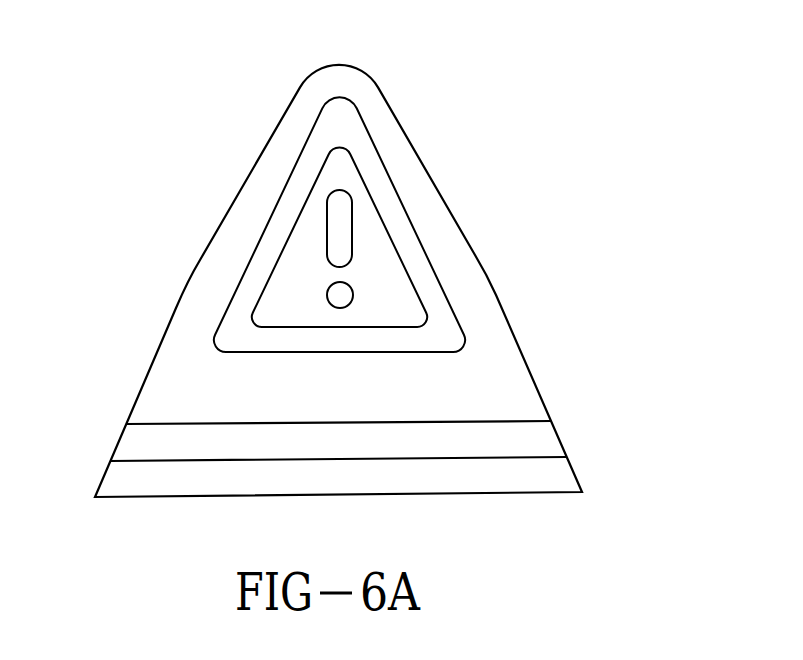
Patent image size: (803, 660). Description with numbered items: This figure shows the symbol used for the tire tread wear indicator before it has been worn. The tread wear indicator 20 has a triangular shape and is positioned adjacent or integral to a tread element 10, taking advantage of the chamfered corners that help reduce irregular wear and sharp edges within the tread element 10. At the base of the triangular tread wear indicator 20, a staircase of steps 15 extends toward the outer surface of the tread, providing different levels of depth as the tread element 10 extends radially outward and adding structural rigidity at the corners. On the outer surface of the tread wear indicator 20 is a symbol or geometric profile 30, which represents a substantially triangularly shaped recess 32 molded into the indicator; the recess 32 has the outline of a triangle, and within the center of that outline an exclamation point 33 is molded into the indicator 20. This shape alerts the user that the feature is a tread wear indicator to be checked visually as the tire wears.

The tread element 10 is at (509, 334).
The steps 15 is at (485, 455).
The tread wear indicator 20 is at (222, 163).
The symbol or geometric profile 30 is at (268, 280).
The triangularly shaped recess 32 is at (360, 153).
The exclamation point 33 is at (342, 225).